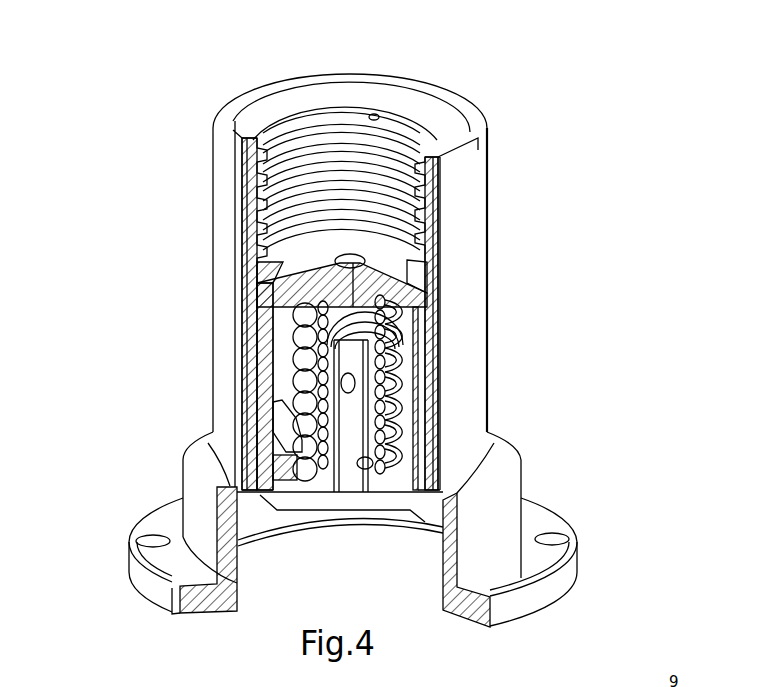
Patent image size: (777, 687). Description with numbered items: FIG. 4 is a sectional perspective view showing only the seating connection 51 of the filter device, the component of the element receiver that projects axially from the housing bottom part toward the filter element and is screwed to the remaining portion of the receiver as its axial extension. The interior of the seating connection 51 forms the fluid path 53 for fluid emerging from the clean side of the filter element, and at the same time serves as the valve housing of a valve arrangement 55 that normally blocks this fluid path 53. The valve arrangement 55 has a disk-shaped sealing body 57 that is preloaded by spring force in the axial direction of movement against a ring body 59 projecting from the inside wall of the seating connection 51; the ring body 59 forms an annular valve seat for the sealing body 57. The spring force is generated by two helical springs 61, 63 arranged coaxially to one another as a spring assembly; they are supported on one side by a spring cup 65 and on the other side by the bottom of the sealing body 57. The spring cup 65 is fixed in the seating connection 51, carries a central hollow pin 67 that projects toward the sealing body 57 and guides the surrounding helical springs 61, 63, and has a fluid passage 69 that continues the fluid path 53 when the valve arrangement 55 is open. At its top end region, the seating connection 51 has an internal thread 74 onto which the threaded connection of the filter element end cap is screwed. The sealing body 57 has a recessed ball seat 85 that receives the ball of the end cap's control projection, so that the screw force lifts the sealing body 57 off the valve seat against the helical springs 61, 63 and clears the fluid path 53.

The seating connection 51 is at (543, 258).
The fluid path 53 is at (278, 356).
The valve arrangement 55 is at (440, 365).
The sealing body 57 is at (388, 252).
The ring body 59 is at (277, 258).
The helical spring 61 is at (430, 332).
The helical spring 63 is at (295, 418).
The spring cup 65 is at (285, 490).
The flange 67 is at (430, 480).
The fluid passage 69 is at (295, 390).
The internal thread 74 is at (378, 113).
The recessed ball seat 85 is at (340, 256).